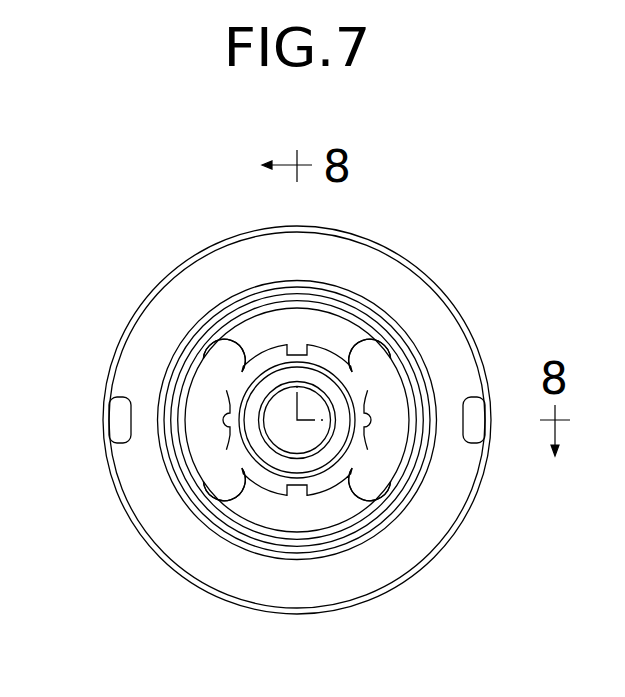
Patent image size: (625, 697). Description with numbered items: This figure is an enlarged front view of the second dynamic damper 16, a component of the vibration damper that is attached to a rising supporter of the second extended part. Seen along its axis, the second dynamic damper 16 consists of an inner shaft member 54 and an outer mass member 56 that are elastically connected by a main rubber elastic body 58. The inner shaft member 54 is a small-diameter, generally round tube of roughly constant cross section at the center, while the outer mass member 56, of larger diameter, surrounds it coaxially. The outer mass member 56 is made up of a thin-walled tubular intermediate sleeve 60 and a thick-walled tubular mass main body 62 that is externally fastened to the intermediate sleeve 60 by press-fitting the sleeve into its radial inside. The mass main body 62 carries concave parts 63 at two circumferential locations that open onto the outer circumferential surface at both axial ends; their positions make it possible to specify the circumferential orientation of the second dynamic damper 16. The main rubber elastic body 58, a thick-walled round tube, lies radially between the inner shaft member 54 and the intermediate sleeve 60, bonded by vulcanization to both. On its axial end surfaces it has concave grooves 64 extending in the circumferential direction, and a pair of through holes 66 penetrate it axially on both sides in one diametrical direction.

The second dynamic damper 16 is at (502, 279).
The inner shaft member 54 is at (317, 462).
The outer mass member 56 is at (149, 281).
The main rubber elastic body 58 is at (206, 439).
The intermediate sleeve 60 is at (244, 304).
The mass main body 62 is at (150, 351).
The concave part 63 is at (118, 433).
The concave groove 64 is at (393, 432).
The through hole 66 is at (379, 371).